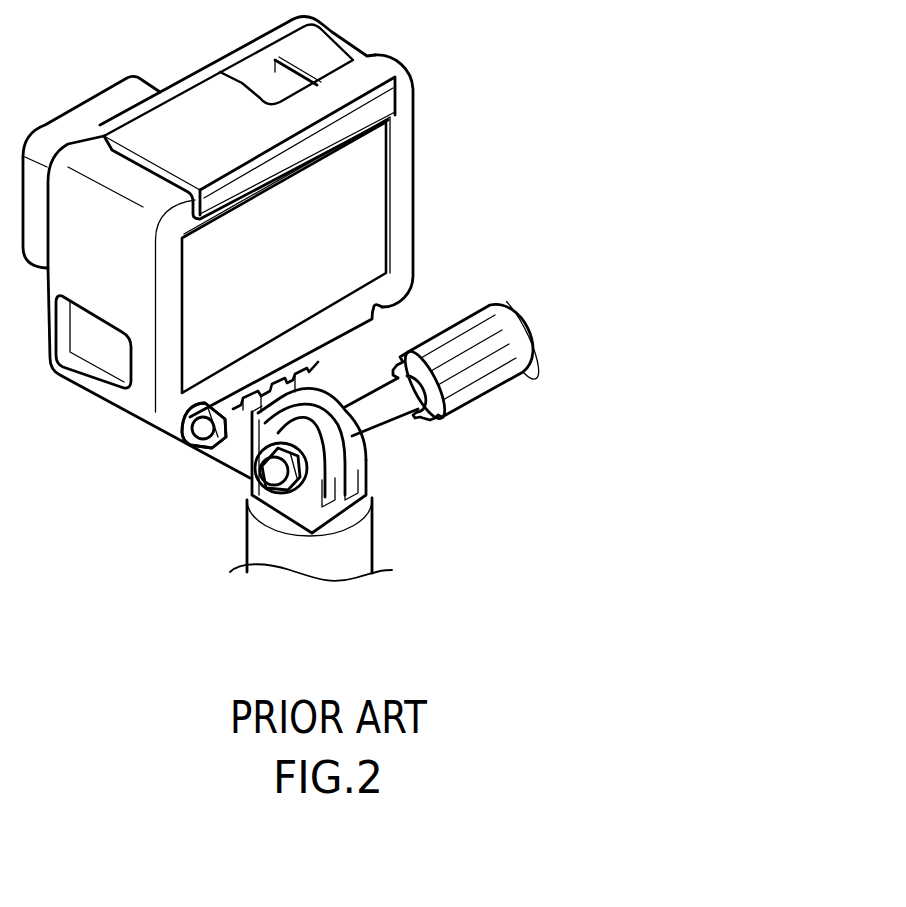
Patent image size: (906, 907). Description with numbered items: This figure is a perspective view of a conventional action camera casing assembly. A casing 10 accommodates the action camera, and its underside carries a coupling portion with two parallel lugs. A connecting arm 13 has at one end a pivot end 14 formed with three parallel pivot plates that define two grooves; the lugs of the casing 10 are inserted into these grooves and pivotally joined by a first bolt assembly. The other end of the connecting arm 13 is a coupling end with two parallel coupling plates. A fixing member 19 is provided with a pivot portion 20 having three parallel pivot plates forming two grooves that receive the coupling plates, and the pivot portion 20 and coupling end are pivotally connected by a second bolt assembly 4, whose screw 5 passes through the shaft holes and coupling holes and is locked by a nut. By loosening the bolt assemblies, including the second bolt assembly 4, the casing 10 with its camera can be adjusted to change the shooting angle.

The casing 10 is at (416, 157).
The second bolt assembly 4 is at (541, 311).
The screw 5 is at (388, 413).
The pivot portion 20 is at (369, 473).
The fixing member 19 is at (375, 545).
The pivot end 14 is at (217, 463).
The connecting arm 13 is at (204, 425).